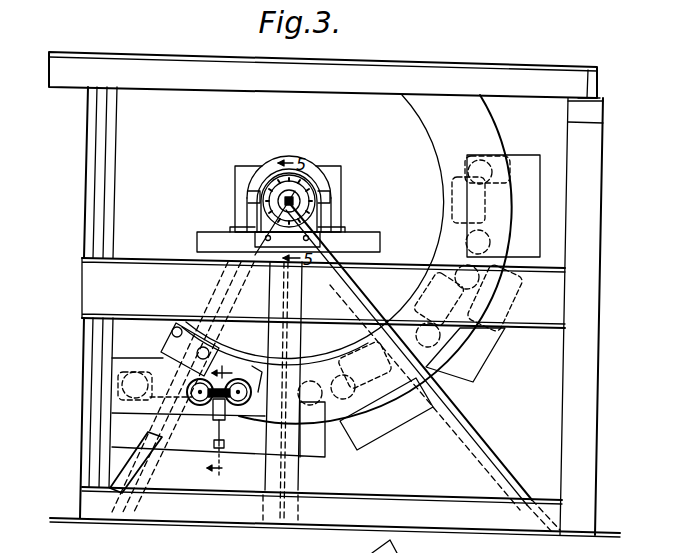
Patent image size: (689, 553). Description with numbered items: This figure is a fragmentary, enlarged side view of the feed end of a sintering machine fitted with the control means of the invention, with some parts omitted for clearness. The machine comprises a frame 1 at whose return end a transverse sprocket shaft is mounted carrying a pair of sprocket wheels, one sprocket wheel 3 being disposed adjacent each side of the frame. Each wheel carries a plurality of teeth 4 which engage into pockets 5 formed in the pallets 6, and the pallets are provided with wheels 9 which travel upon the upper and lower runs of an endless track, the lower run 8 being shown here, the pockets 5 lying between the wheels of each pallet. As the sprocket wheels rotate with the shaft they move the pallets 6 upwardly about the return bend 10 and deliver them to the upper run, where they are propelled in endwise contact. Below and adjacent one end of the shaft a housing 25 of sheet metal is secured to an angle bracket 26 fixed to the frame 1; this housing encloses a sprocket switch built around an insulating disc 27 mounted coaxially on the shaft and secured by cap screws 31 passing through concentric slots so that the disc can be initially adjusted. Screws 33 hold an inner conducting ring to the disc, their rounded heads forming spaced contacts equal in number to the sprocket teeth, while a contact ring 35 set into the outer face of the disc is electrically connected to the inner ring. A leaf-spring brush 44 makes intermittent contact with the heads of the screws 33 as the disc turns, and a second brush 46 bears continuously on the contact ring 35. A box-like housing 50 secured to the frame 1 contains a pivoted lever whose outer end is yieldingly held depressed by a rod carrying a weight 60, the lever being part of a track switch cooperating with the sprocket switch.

The frame 1 is at (545, 68).
The sprocket wheel 3 is at (153, 327).
The teeth 4 is at (478, 200).
The pockets 5 is at (492, 219).
The pallets 6 is at (533, 194).
The lower run 8 is at (219, 422).
The wheels 9 is at (492, 172).
The return bend 10 is at (492, 130).
The housing 25 is at (307, 182).
The angle bracket 26 is at (357, 268).
The disc 27 is at (255, 207).
The cap screws 31 is at (262, 201).
The screws 33 is at (273, 168).
The contact ring 35 is at (313, 170).
The brush 44 is at (340, 208).
The second brush 46 is at (243, 257).
The housing 50 is at (212, 428).
The weight 60 is at (217, 440).